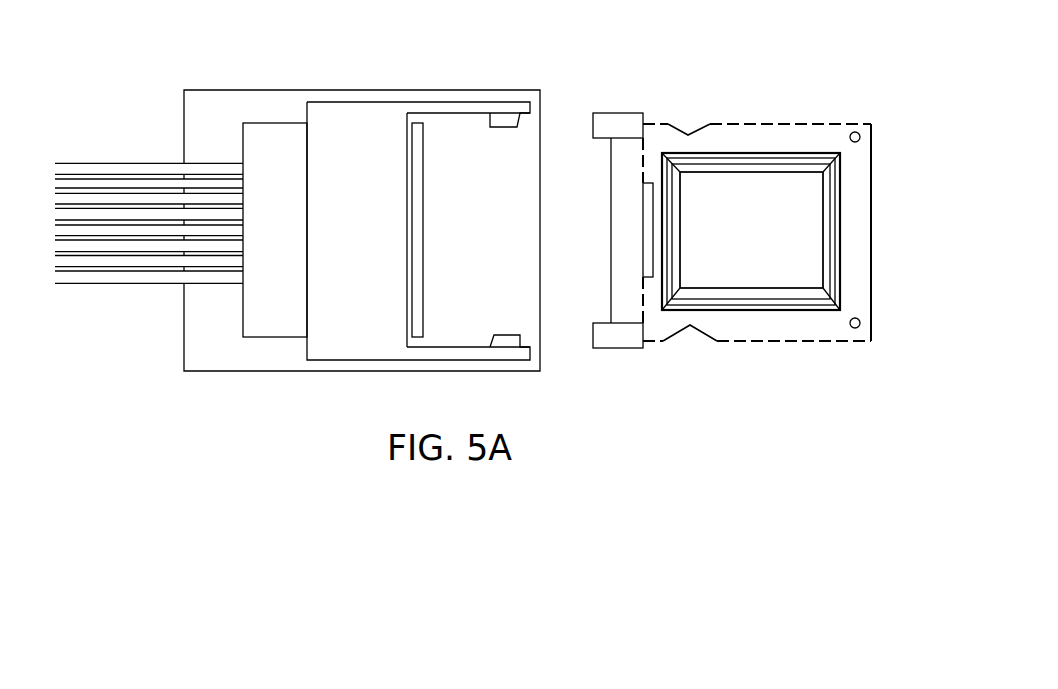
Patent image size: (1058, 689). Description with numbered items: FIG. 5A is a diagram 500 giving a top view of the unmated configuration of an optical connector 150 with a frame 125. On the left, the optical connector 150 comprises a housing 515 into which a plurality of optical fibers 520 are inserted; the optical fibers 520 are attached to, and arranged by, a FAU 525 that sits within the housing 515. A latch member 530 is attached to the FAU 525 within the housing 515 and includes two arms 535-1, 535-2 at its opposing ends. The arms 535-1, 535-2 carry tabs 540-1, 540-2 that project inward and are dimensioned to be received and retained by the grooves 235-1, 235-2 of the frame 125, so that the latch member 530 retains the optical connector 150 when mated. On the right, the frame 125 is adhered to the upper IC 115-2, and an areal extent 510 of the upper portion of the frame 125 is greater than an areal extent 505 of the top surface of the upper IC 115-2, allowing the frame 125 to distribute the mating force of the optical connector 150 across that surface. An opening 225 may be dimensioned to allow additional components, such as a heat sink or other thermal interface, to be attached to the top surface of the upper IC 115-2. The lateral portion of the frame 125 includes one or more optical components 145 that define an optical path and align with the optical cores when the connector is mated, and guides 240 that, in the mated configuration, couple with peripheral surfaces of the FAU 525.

The optical connector 150 is at (180, 78).
The housing 515 is at (277, 90).
The optical fibers 520 is at (120, 292).
The FAU 525 is at (269, 332).
The latch member 530 is at (362, 340).
The arm 535-1 is at (434, 114).
The arm 535-2 is at (445, 346).
The tab 540-1 is at (508, 132).
The tab 540-2 is at (508, 332).
The diagram 500 is at (830, 72).
The frame 125 is at (878, 243).
The areal extent 510 is at (847, 120).
The groove 235-1 is at (686, 120).
The groove 235-2 is at (687, 343).
The areal extent 505 is at (738, 163).
The opening 225 is at (718, 255).
The upper IC 115-2 is at (802, 186).
The optical components 145 is at (603, 243).
The guides 240 is at (607, 111).